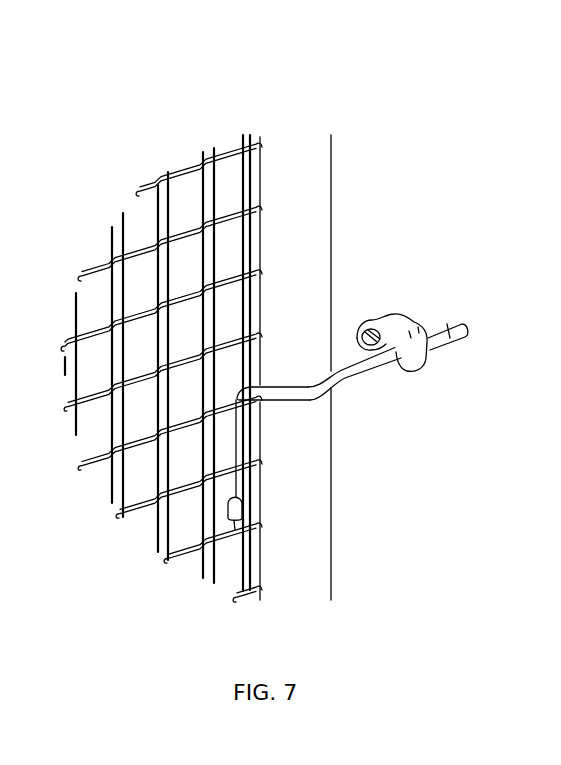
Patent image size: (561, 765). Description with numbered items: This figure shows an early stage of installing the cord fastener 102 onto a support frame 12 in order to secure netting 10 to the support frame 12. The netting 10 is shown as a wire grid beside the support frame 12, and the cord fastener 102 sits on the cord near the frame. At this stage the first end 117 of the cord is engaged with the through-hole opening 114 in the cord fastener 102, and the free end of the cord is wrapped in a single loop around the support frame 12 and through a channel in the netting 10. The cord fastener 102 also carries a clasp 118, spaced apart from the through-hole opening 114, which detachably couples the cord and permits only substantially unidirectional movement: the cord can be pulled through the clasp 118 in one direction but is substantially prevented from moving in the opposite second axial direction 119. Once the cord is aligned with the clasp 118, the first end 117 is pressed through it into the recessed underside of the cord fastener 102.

The netting 10 is at (193, 163).
The support frame 12 is at (305, 150).
The cord fastener 102 is at (404, 314).
The through-hole opening 114 is at (402, 366).
The first end 117 is at (474, 338).
The clasp 118 is at (352, 340).
The second axial direction 119 is at (234, 531).